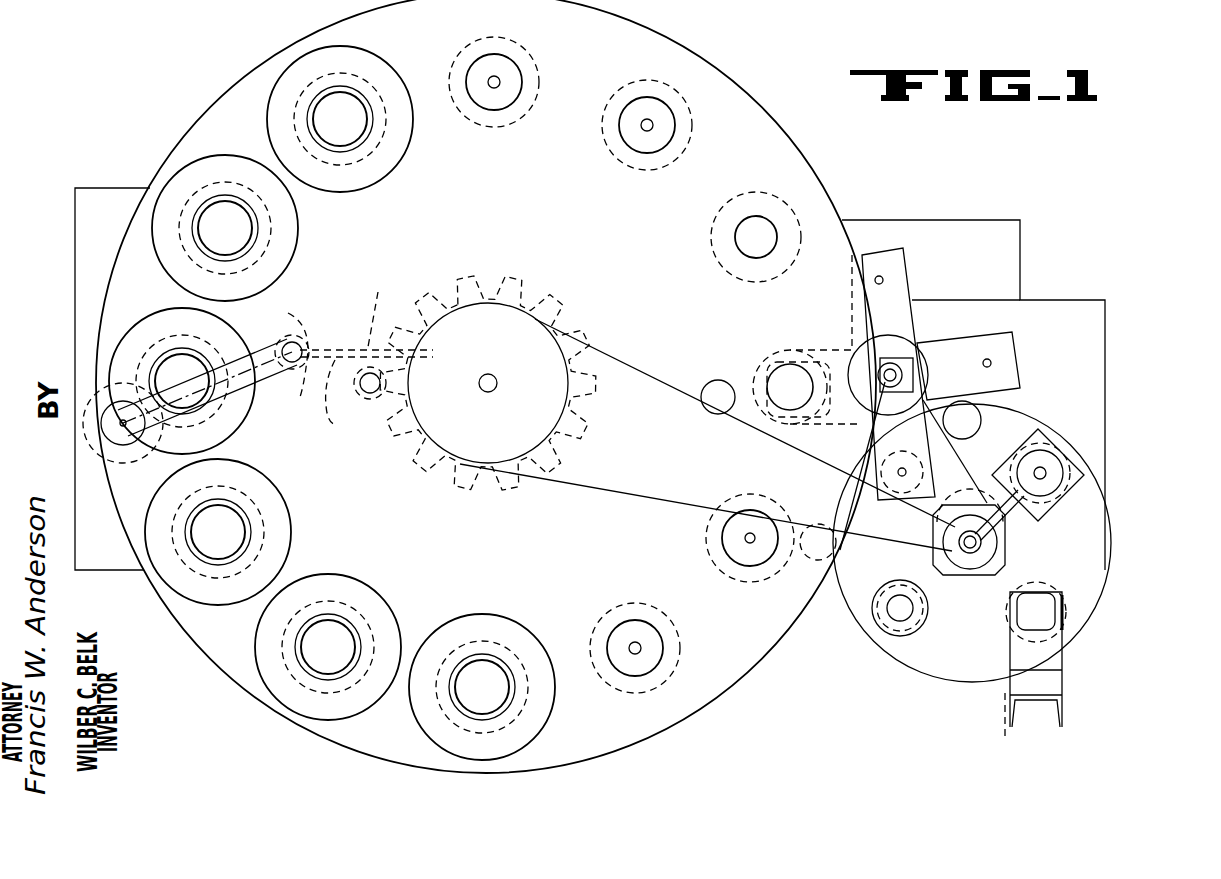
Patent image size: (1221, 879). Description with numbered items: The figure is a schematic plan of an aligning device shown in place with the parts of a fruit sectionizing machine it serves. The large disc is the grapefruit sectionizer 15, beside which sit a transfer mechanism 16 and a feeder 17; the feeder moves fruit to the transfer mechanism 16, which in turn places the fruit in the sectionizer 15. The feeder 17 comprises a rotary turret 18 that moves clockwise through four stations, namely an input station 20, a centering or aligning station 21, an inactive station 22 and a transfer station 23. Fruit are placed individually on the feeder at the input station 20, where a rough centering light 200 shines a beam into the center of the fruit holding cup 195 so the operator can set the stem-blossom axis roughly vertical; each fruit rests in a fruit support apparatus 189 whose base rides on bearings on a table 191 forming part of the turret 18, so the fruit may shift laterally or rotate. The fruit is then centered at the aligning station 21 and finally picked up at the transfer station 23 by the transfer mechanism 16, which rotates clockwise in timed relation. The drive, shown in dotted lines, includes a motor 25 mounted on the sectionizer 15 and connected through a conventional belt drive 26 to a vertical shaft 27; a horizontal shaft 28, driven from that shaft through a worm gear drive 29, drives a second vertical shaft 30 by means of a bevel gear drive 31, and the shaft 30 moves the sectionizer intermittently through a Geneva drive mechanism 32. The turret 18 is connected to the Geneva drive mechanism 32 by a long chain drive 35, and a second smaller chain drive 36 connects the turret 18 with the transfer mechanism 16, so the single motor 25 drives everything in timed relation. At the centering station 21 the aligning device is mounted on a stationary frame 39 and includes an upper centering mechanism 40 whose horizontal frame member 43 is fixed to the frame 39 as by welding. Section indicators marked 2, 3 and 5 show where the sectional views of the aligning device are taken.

The grapefruit sectionizer 15 is at (206, 112).
The transfer mechanism 16 is at (905, 243).
The feeder 17 is at (1024, 404).
The rotary turret 18 is at (1106, 512).
The input station 20 is at (1086, 452).
The rough centering light 200 is at (1052, 478).
The centering or aligning station 21 is at (1084, 614).
The inactive station 22 is at (866, 632).
The transfer station 23 is at (867, 475).
The motor 25 is at (104, 398).
The belt drive 26 is at (232, 423).
The vertical shaft 27 is at (279, 337).
The horizontal shaft 28 is at (328, 343).
The worm gear drive 29 is at (209, 387).
The second vertical shaft 30 is at (382, 383).
The bevel gear drive 31 is at (366, 400).
The Geneva drive mechanism 32 is at (447, 284).
The long chain drive 35 is at (655, 322).
The second smaller chain drive 36 is at (930, 518).
The stationary frame 39 is at (1064, 712).
The upper centering mechanism 40 is at (1072, 595).
The horizontal frame member 43 is at (1034, 633).
The fruit support apparatus 189 is at (860, 604).
The table 191 is at (932, 665).
The fruit holding cup 195 is at (1010, 607).
The section line 2 is at (693, 425).
The section line 3 is at (955, 690).
The section line 5 is at (1013, 580).